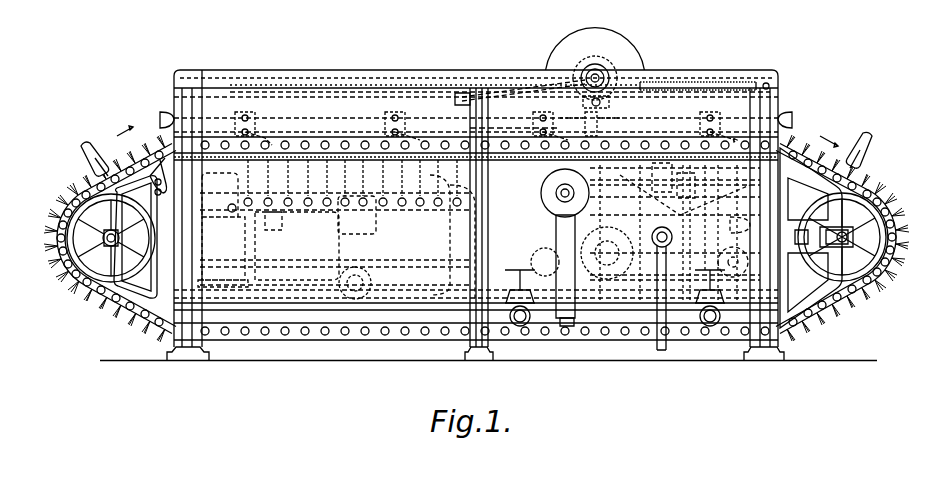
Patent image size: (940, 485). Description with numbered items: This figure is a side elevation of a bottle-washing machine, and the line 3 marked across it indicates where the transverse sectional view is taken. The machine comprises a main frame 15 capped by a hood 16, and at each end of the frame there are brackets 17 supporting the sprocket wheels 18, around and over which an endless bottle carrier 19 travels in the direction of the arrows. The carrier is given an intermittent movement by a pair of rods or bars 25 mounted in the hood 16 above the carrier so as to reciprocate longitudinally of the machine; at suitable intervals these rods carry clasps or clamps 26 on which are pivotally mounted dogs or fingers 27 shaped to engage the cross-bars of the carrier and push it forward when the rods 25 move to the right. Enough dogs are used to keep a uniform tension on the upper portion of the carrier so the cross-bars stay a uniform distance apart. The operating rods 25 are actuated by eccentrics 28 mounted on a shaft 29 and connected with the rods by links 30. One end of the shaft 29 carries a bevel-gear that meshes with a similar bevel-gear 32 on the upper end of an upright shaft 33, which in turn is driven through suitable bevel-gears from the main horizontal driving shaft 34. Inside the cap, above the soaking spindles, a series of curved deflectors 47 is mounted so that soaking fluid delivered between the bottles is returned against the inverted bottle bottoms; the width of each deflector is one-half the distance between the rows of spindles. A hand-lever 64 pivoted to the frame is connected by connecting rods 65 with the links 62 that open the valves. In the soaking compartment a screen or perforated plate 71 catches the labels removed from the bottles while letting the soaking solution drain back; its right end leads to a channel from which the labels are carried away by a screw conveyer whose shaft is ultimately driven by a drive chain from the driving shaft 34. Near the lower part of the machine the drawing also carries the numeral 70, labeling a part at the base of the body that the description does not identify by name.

The section line 3— 3 is at (355, 393).
The main frame 15 is at (788, 142).
The hood 16 is at (494, 70).
The brackets 17 is at (118, 297).
The sprocket wheels 18 is at (70, 245).
The endless bottle carrier 19 is at (856, 290).
The rods or bars 25 is at (506, 128).
The clasps or clamps 26 is at (546, 127).
The dogs or fingers 27 is at (405, 134).
The eccentrics 28 is at (622, 70).
The shaft 29 is at (588, 74).
The links 30 is at (511, 88).
The bevel-gear 32 is at (606, 106).
The upright shaft 33 is at (595, 128).
The main horizontal driving shaft 34 is at (598, 285).
The curved deflectors 47 is at (584, 69).
The links 62 is at (306, 210).
The hand-lever 64 is at (150, 148).
The connecting rods 65 is at (212, 200).
The shaft 70 is at (579, 310).
The screen or perforated plate 71 is at (302, 158).